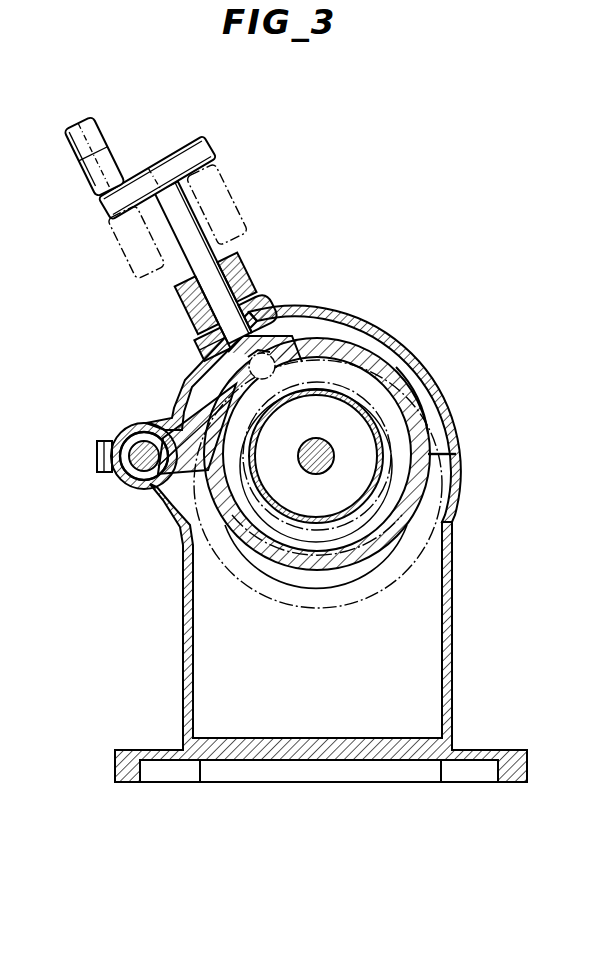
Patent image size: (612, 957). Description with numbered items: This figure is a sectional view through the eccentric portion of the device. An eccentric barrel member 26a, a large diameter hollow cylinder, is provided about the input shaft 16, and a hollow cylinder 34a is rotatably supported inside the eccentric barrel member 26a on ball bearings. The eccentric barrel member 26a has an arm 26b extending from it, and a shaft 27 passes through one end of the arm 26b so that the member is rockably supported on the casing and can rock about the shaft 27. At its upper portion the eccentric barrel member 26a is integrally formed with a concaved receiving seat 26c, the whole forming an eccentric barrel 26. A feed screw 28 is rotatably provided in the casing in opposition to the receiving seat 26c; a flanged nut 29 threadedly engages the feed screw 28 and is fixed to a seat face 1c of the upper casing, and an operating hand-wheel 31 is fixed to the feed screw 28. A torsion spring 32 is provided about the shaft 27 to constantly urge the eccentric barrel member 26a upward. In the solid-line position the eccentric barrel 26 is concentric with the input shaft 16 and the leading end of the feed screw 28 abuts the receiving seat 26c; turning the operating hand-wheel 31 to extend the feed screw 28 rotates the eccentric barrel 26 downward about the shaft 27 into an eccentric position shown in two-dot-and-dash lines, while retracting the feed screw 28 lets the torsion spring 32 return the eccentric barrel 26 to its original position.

The operating hand-wheel 31 is at (208, 140).
The feed screw 28 is at (220, 248).
The flanged nut 29 is at (247, 282).
The seat face 1c is at (204, 330).
The concaved receiving seat 26c is at (256, 353).
The torsion spring 32 is at (140, 420).
The shaft 27 is at (111, 480).
The arm 26b is at (177, 482).
The eccentric barrel 26 is at (386, 359).
The eccentric barrel member 26a is at (413, 401).
The hollow cylinder 34a is at (383, 448).
The input shaft 16 is at (327, 466).